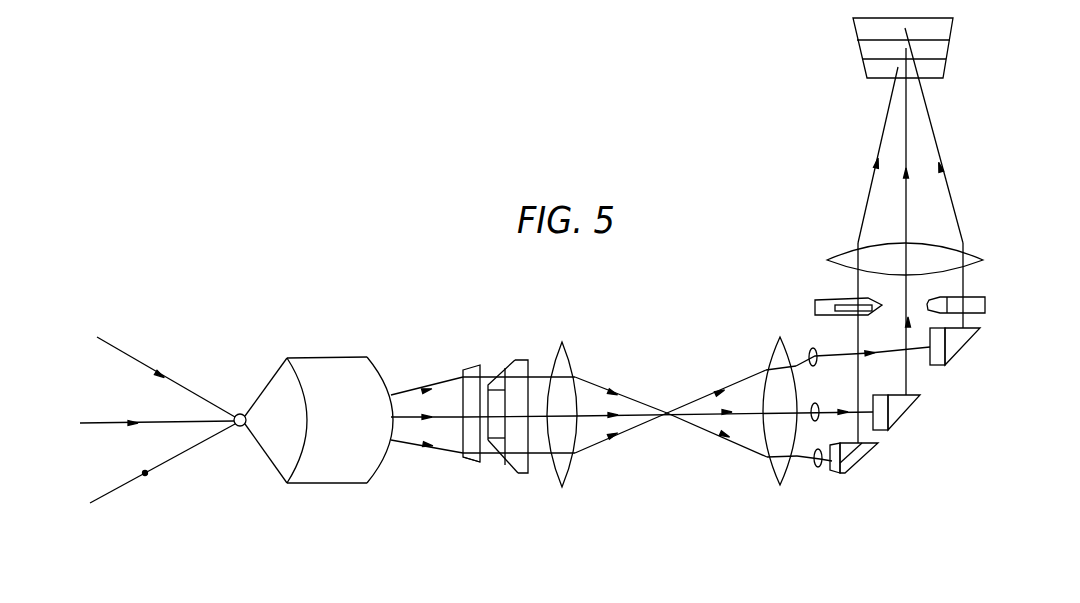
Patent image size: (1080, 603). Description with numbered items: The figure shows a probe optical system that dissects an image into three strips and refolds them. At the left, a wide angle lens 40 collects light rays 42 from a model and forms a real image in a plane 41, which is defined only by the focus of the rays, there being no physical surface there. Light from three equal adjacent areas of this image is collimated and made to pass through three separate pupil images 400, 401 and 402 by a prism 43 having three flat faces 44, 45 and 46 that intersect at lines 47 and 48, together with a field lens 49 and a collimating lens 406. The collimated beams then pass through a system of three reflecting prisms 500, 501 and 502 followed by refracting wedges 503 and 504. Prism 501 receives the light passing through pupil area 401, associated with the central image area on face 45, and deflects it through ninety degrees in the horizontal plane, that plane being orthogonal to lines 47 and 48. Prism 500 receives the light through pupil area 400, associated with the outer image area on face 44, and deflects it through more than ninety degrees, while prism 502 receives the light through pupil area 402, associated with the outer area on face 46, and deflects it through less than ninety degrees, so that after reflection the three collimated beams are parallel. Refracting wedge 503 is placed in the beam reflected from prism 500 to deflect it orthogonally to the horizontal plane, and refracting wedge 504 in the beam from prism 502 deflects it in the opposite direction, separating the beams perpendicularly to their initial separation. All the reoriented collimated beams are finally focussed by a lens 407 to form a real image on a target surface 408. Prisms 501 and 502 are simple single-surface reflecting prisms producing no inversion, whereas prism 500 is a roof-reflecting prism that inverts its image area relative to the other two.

The wide angle lens 40 is at (358, 429).
The plane 41 is at (470, 368).
The light rays 42 is at (130, 359).
The prism 43 is at (532, 358).
The flat face 44 is at (513, 358).
The flat face 45 is at (498, 430).
The flat face 46 is at (513, 471).
The intersection line 47 is at (503, 378).
The intersection line 48 is at (478, 453).
The field lens 49 is at (571, 478).
The pupil image 400 is at (817, 468).
The pupil image 401 is at (819, 406).
The pupil image 402 is at (820, 339).
The collimating lens 406 is at (771, 458).
The lens 407 is at (975, 251).
The target surface 408 is at (953, 24).
The reflecting prism 500 is at (880, 447).
The reflecting prism 501 is at (920, 398).
The reflecting prism 502 is at (981, 329).
The refracting wedge 503 is at (822, 298).
The refracting wedge 504 is at (980, 295).